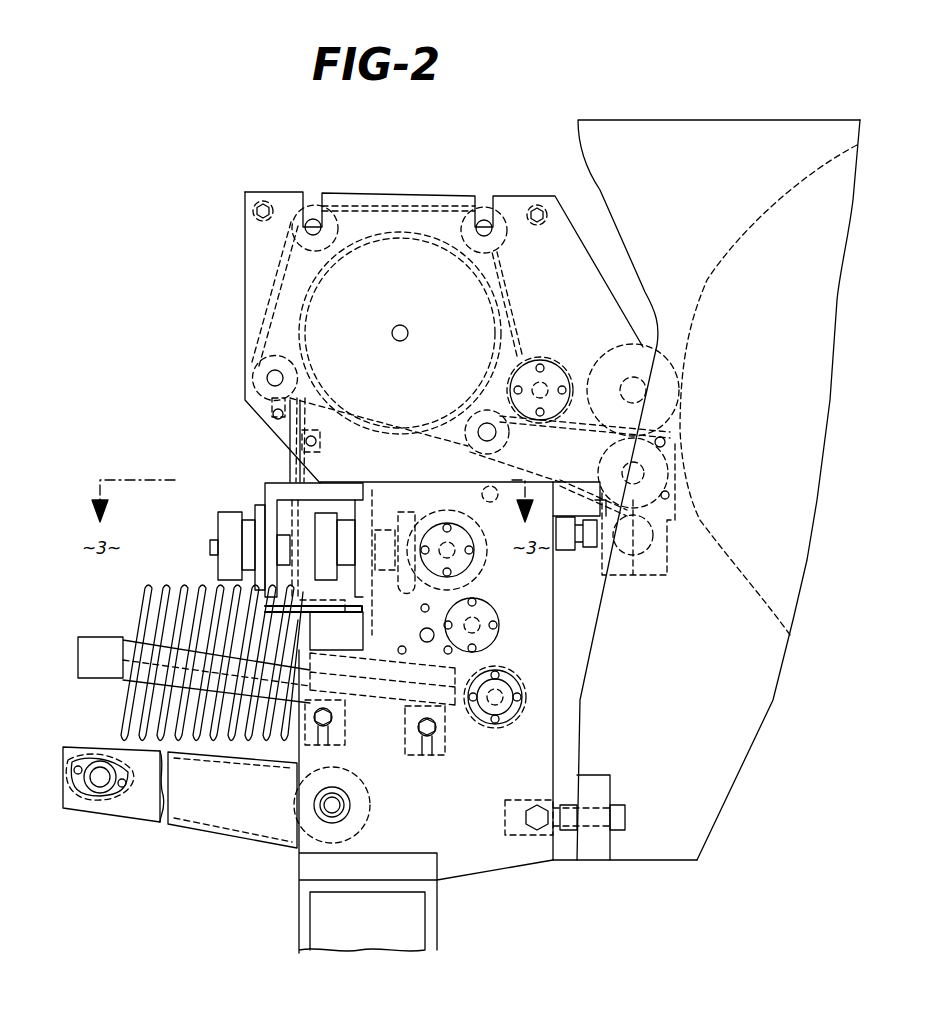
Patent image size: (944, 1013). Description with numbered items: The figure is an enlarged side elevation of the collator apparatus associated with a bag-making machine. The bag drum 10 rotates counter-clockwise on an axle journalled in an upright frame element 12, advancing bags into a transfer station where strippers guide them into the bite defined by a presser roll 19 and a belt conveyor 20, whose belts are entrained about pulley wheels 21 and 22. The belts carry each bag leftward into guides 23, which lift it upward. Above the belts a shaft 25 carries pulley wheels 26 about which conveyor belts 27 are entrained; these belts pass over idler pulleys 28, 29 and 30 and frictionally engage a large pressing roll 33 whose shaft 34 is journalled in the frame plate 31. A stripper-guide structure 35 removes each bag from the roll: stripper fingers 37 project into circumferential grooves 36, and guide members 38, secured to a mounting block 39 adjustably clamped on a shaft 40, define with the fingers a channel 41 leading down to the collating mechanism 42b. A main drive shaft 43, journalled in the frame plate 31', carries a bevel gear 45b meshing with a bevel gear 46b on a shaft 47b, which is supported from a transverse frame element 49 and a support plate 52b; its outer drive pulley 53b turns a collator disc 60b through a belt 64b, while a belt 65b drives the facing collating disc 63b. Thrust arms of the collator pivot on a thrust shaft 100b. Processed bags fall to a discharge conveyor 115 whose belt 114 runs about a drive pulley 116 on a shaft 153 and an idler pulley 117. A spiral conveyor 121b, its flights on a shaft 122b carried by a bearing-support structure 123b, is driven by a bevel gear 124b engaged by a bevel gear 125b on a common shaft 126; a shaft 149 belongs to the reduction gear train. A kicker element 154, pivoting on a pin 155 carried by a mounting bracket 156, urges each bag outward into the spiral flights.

The cylinder or drum 10 is at (778, 201).
The upright frame element 12 is at (722, 803).
The presser roll 19 is at (668, 355).
The belt conveyor 20 is at (605, 438).
The sheave or pulley wheel 21 is at (660, 468).
The sheave or pulley wheel 22 is at (475, 424).
The guides 23 is at (499, 398).
The shaft 25 is at (546, 388).
The pulley wheels or sheaves 26 is at (513, 372).
The conveyor belts 27 is at (288, 272).
The idler pulley 28 is at (498, 216).
The idler pulley 29 is at (322, 220).
The idler pulley 30 is at (266, 378).
The frame plate 31 is at (471, 551).
The frame plate 31' is at (497, 887).
The pressing roll 33 is at (305, 314).
The shaft 34 is at (410, 313).
The stripper-guide structure 35 is at (282, 464).
The grooves or recesses 36 is at (412, 422).
The stripper fingers 37 is at (308, 406).
The guide members 38 is at (292, 472).
The mounting block 39 is at (290, 426).
The shaft 40 is at (272, 418).
The channel 41 is at (298, 478).
The collating mechanism 42b is at (218, 568).
The main drive shaft 43 is at (465, 558).
The bevel gear 45b is at (493, 524).
The bevel gear 46b is at (436, 510).
The shaft 47b is at (212, 548).
The frame element 49 is at (383, 495).
The plate or bracket 52b is at (265, 500).
The outer drive pulley 53b is at (242, 532).
The collator disc 60b is at (315, 500).
The collating disc 63b is at (325, 525).
The belt 64b is at (255, 512).
The belt 65b is at (335, 545).
The thrust or pivot shaft 100b is at (305, 705).
The conveyor belt 114 is at (180, 756).
The discharge conveyor 115 is at (226, 838).
The drive pulley 116 is at (296, 806).
The idler pulley 117 is at (122, 800).
The spiral conveyor 121b is at (146, 612).
The shaft 122b is at (114, 633).
The bearing-support structure 123b is at (368, 715).
The bevel gear 124b is at (466, 720).
The bevel gear 125b is at (502, 690).
The shaft 126 is at (505, 722).
The shaft 149 is at (478, 625).
The shaft 153 is at (340, 806).
The displacement or kicker element 154 is at (270, 744).
The pin 155 is at (345, 612).
The mounting bracket 156 is at (362, 608).